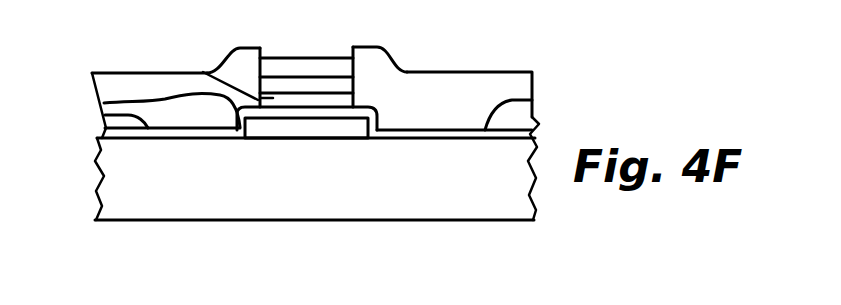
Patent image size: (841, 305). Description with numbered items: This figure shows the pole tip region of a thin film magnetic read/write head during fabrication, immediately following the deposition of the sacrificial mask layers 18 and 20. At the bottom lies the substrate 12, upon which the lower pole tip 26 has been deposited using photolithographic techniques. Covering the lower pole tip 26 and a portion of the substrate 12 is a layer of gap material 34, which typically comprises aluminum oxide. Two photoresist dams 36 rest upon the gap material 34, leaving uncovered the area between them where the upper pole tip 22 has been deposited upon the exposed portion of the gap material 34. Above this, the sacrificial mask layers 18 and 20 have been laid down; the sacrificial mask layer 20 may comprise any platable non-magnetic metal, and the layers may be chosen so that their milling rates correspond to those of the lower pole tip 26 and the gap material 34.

The substrate 12 is at (118, 205).
The sacrificial mask layer 18 is at (287, 83).
The sacrificial mask layer 20 is at (338, 63).
The upper pole tip 22 is at (207, 70).
The lower pole tip 26 is at (292, 127).
The gap material 34 is at (104, 105).
The photoresist dams 36 is at (237, 63).